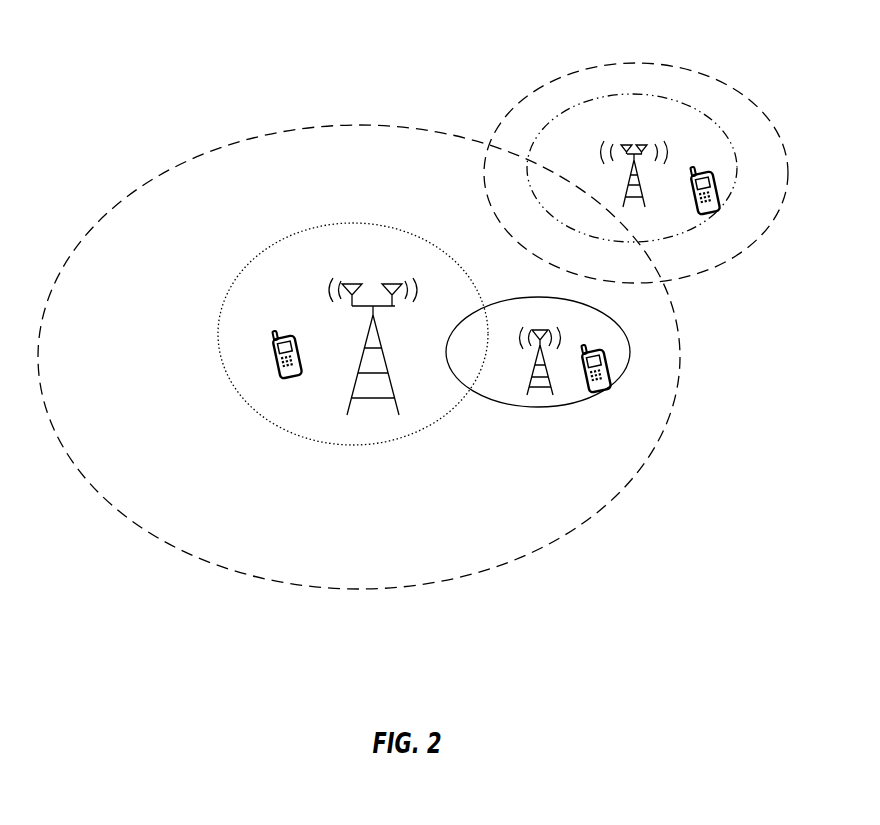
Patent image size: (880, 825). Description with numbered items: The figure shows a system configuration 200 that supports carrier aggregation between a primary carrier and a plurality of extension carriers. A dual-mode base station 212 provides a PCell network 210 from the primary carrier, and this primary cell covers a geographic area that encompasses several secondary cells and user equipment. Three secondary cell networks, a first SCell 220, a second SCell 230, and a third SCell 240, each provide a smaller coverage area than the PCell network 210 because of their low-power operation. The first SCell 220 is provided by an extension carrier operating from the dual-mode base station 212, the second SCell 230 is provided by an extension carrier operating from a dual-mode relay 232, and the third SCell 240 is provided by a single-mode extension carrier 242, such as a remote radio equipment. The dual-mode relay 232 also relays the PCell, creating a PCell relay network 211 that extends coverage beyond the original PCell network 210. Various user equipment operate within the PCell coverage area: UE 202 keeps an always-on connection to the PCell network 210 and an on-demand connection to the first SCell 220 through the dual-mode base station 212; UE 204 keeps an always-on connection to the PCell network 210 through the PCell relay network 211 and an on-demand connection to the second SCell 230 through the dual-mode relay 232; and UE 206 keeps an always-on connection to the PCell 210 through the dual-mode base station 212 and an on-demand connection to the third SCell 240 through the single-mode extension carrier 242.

The system configuration 200 is at (127, 42).
The UE 202 is at (275, 368).
The UE 204 is at (707, 217).
The UE 206 is at (606, 383).
The PCell network 210 is at (188, 555).
The PCell relay network 211 is at (530, 97).
The dual-mode base station 212 is at (372, 415).
The SCell-1 220 is at (230, 292).
The SCell-2 230 is at (532, 147).
The dual-mode relay 232 is at (622, 204).
The SCell-3 240 is at (517, 405).
The single-mode extension carrier 242 is at (539, 395).